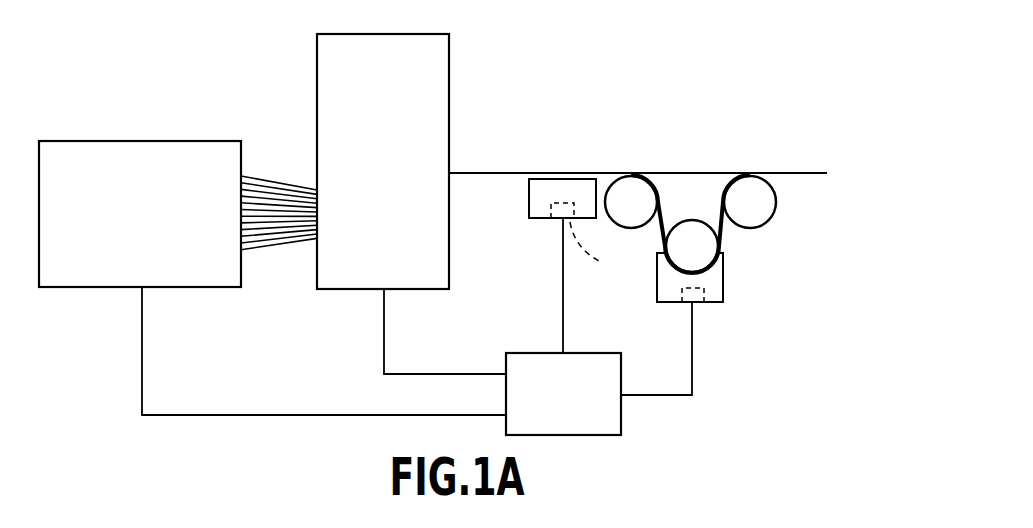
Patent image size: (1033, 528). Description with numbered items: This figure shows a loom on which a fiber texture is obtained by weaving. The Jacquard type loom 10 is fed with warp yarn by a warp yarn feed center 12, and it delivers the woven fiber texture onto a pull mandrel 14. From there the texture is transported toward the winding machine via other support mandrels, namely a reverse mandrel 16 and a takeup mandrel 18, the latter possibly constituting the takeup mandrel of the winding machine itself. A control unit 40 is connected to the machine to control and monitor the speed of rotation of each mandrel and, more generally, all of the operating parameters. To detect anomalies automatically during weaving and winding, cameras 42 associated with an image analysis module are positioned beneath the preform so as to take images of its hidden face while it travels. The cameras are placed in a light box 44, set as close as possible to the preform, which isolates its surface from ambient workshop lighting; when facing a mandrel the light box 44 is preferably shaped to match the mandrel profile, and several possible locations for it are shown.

The Jacquard type loom 10 is at (392, 173).
The warp yarn feed center 12 is at (123, 228).
The pull mandrel 14 is at (630, 193).
The reverse mandrel 16 is at (688, 228).
The takeup mandrel 18 is at (750, 190).
The control unit 40 is at (550, 406).
The cameras 42 is at (672, 293).
The light box 44 is at (529, 199).